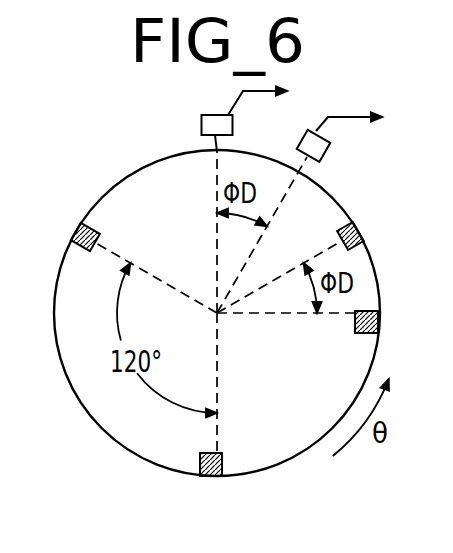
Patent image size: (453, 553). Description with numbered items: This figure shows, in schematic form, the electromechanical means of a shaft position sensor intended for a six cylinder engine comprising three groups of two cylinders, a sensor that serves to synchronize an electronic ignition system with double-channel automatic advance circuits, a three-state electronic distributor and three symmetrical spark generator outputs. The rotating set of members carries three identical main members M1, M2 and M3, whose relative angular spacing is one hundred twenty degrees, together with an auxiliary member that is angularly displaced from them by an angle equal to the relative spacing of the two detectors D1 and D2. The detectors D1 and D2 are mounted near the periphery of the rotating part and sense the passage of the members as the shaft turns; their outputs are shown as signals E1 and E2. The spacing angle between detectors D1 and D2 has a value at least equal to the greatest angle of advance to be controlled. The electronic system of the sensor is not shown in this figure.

The detector D1 is at (201, 125).
The detector D2 is at (320, 152).
The first detector output signal E1 is at (275, 93).
The second detector output signal E2 is at (369, 117).
The main member M1 is at (82, 229).
The main member M2 is at (360, 246).
The main member M3 is at (208, 476).